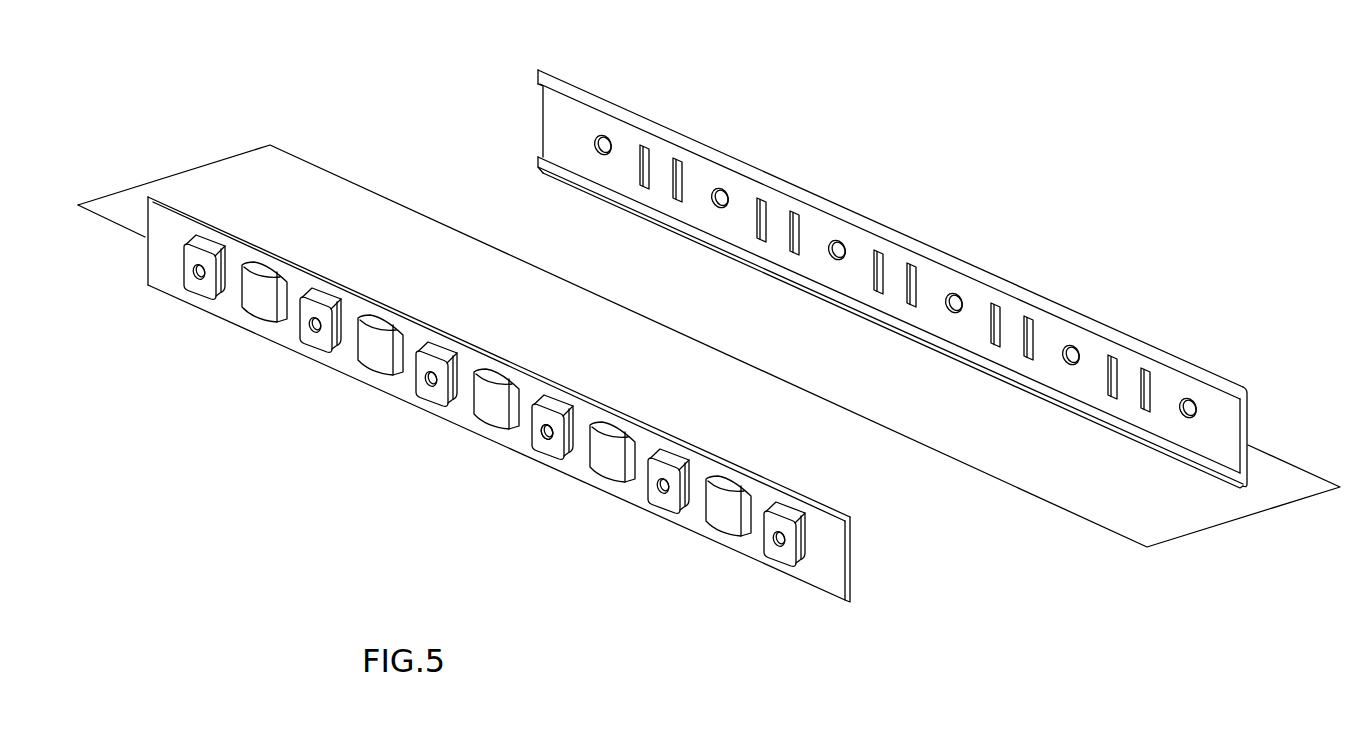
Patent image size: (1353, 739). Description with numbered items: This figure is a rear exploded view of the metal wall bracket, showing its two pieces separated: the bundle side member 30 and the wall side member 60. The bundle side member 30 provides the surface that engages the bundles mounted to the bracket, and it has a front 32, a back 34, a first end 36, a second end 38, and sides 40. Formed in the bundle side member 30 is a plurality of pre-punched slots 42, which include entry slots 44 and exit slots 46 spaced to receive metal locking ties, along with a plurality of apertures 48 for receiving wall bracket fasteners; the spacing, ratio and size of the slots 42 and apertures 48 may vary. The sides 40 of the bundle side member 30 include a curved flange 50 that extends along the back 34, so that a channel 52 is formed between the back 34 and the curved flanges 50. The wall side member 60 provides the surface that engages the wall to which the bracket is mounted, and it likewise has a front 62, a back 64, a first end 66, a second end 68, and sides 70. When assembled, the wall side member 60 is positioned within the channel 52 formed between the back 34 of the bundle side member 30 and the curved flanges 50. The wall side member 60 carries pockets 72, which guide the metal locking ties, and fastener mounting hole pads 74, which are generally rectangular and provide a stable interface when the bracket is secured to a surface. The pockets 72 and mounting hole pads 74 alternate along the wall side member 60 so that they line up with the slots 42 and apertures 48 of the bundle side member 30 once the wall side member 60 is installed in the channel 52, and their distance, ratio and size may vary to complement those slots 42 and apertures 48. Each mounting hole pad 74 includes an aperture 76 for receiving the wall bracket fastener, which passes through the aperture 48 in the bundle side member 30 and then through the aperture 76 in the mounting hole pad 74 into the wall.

The bundle side member 30 is at (663, 125).
The front 32 is at (1172, 355).
The back 34 is at (1213, 435).
The first end 36 is at (1247, 433).
The second end 38 is at (541, 121).
The sides 40 is at (976, 266).
The pre-punched slots 42 is at (1140, 375).
The entry slots 44 is at (1106, 399).
The exit slots 46 is at (1141, 413).
The apertures 48 is at (1179, 416).
The curved flange 50 is at (1217, 390).
The channel 52 is at (1247, 490).
The wall side member 60 is at (243, 317).
The front 62 is at (851, 557).
The back 64 is at (815, 578).
The first end 66 is at (853, 585).
The second end 68 is at (150, 254).
The sides 70 is at (290, 258).
The pockets 72 is at (375, 355).
The fastener mounting hole pads 74 is at (553, 461).
The aperture 76 is at (545, 430).